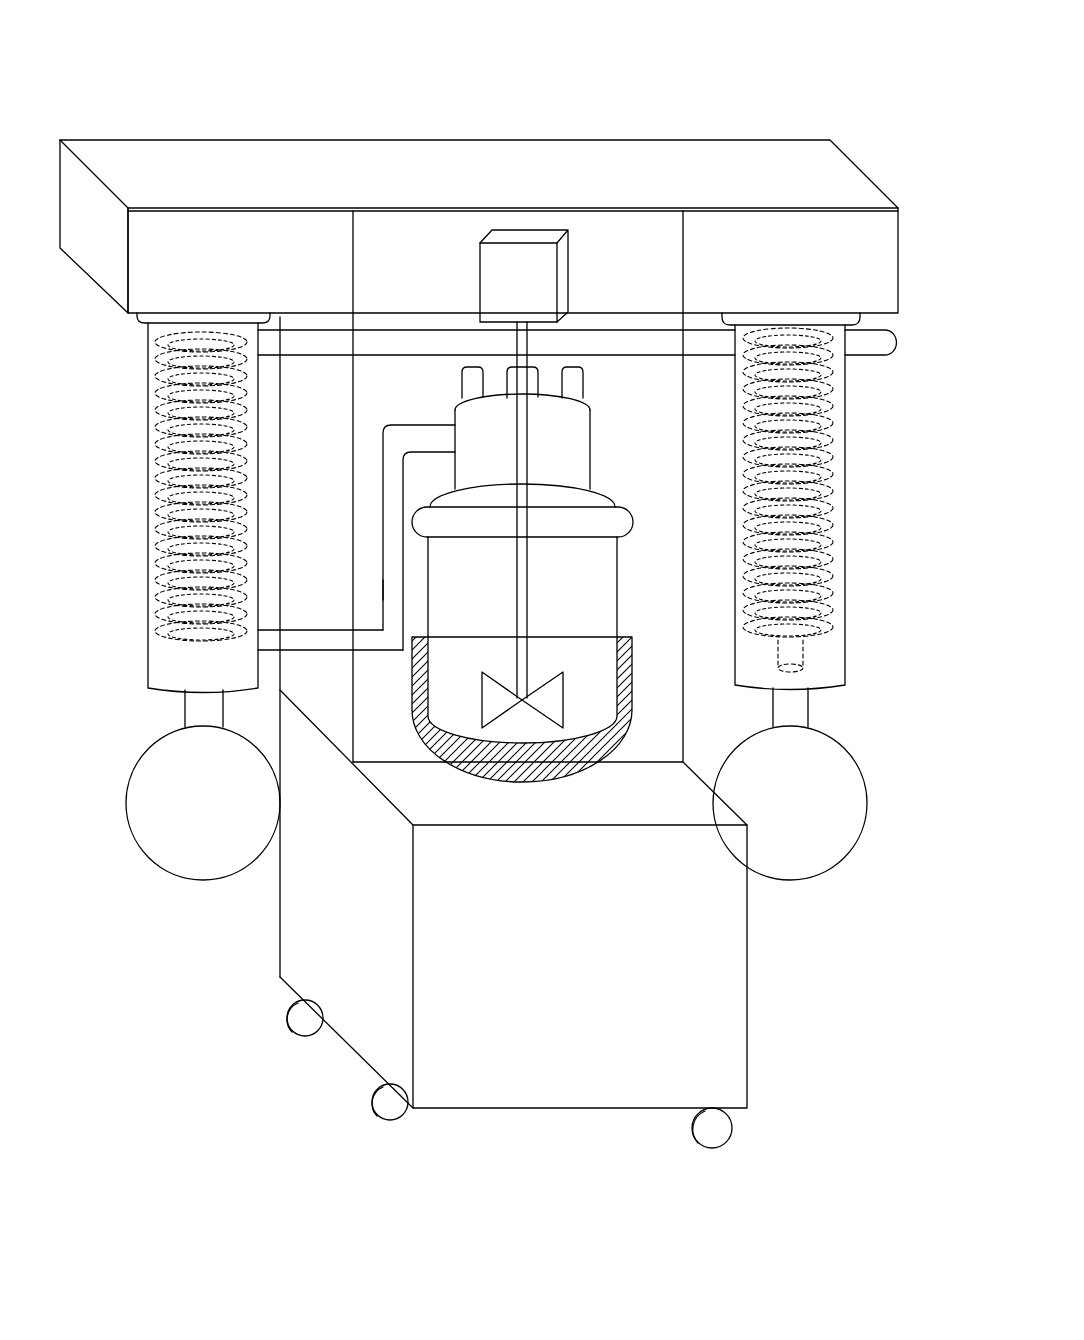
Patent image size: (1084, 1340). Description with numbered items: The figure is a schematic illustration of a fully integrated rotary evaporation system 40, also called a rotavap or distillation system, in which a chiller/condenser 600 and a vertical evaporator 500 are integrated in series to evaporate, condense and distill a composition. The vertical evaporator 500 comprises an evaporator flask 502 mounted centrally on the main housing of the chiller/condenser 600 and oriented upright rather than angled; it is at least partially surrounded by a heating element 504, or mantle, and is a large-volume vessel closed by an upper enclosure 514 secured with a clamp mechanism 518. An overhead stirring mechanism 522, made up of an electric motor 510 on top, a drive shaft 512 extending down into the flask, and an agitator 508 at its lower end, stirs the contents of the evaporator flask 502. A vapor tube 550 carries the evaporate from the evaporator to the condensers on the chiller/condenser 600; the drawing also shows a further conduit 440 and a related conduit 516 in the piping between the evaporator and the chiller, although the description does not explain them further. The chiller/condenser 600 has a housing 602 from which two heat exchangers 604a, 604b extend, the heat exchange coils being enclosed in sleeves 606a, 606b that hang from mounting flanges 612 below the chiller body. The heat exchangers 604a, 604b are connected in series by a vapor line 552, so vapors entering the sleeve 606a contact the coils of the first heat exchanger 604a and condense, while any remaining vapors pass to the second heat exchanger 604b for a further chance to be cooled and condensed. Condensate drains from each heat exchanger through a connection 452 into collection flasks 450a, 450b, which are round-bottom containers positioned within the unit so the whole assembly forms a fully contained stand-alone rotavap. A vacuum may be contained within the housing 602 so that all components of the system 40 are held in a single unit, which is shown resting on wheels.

The rotary evaporation system 40 is at (697, 85).
The chiller/condenser 600 is at (437, 168).
The overhead stirring mechanism 522 is at (490, 425).
The vertical evaporator 500 is at (605, 300).
The electric motor 510 is at (500, 273).
The drive shaft 512 is at (523, 445).
The upper enclosure 514 is at (570, 465).
The inlet conduit 516 is at (412, 438).
The clamp mechanism 518 is at (617, 520).
The evaporator flask 502 is at (617, 600).
The heating element 504 is at (632, 670).
The agitator 508 is at (497, 700).
The vapor tube 550 is at (393, 573).
The vapor line 552 is at (617, 343).
The transfer conduit 440 is at (267, 630).
The heat exchanger 604a is at (823, 483).
The heat exchanger 604b is at (165, 483).
The sleeve 606a is at (847, 653).
The condenser housing 606b is at (148, 668).
The mounting flange 612 is at (148, 320).
The connection 452 is at (203, 710).
The collection flask 450a is at (865, 830).
The collection flask 450b is at (130, 833).
The housing 602 is at (693, 968).